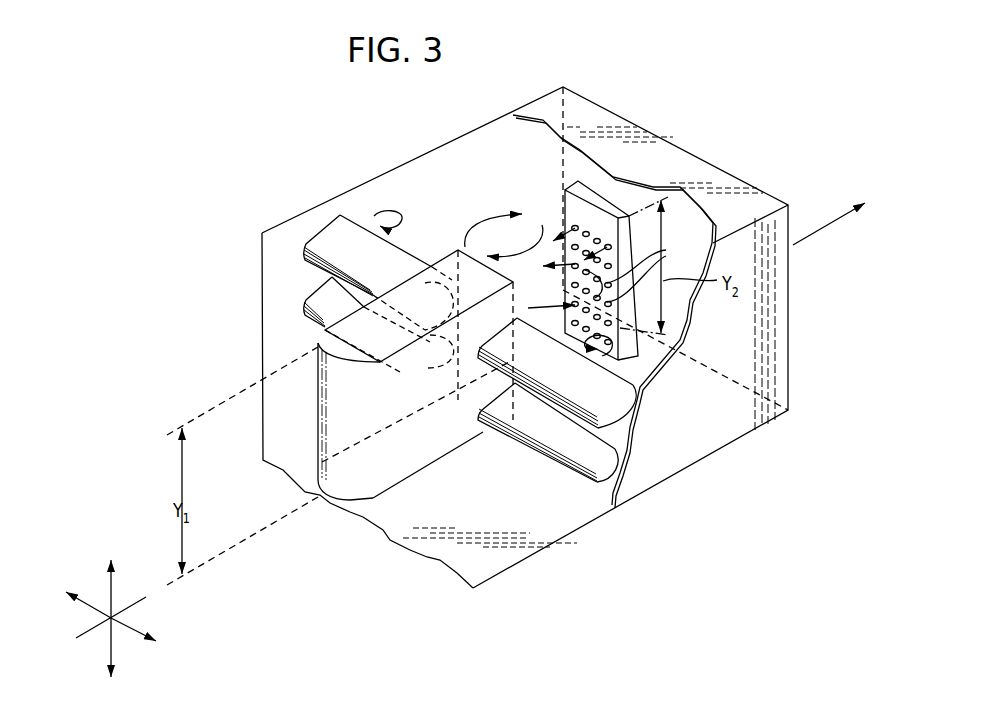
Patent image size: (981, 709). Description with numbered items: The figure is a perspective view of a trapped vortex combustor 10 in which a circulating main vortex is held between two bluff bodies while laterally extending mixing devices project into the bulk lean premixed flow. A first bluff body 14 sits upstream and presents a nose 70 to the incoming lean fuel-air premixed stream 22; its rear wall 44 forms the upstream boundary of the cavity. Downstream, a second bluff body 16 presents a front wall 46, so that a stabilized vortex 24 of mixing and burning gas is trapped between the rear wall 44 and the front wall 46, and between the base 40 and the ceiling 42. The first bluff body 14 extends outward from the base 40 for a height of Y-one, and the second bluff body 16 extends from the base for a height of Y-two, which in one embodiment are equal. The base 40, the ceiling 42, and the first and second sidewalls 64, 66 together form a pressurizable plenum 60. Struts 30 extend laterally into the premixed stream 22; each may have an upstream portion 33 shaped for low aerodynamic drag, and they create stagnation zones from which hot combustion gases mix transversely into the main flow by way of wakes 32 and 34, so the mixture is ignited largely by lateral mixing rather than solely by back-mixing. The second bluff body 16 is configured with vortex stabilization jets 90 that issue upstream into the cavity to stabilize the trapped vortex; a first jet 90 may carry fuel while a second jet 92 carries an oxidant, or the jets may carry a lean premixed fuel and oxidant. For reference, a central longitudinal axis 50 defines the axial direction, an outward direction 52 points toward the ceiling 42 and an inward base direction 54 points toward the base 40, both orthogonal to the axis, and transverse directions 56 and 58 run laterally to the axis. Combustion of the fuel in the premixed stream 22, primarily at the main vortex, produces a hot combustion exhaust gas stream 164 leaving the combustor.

The trapped vortex combustor 10 is at (360, 166).
The first bluff body 14 is at (435, 443).
The second bluff body 16 is at (677, 353).
The lean fuel-air premixed stream 22 is at (545, 300).
The vortex 24 is at (483, 216).
The struts 30 is at (317, 231).
The wake 32 is at (596, 354).
The upstream portion 33 is at (300, 266).
The wake 34 is at (372, 212).
The base 40 is at (483, 562).
The ceiling 42 is at (548, 102).
The rear wall 44 is at (481, 262).
The front wall 46 is at (640, 360).
The central longitudinal axis 50 is at (108, 630).
The outward direction 52 is at (104, 592).
The inward base direction 54 is at (125, 640).
The transverse direction 56 is at (128, 628).
The transverse direction 58 is at (95, 610).
The pressurizable plenum 60 is at (688, 158).
The first sidewall 64 is at (540, 100).
The second sidewall 66 is at (735, 432).
The nose 70 is at (318, 394).
The vortex stabilization jets 90 is at (565, 236).
The second jet 92 is at (578, 226).
The hot combustion exhaust gas stream 164 is at (812, 238).